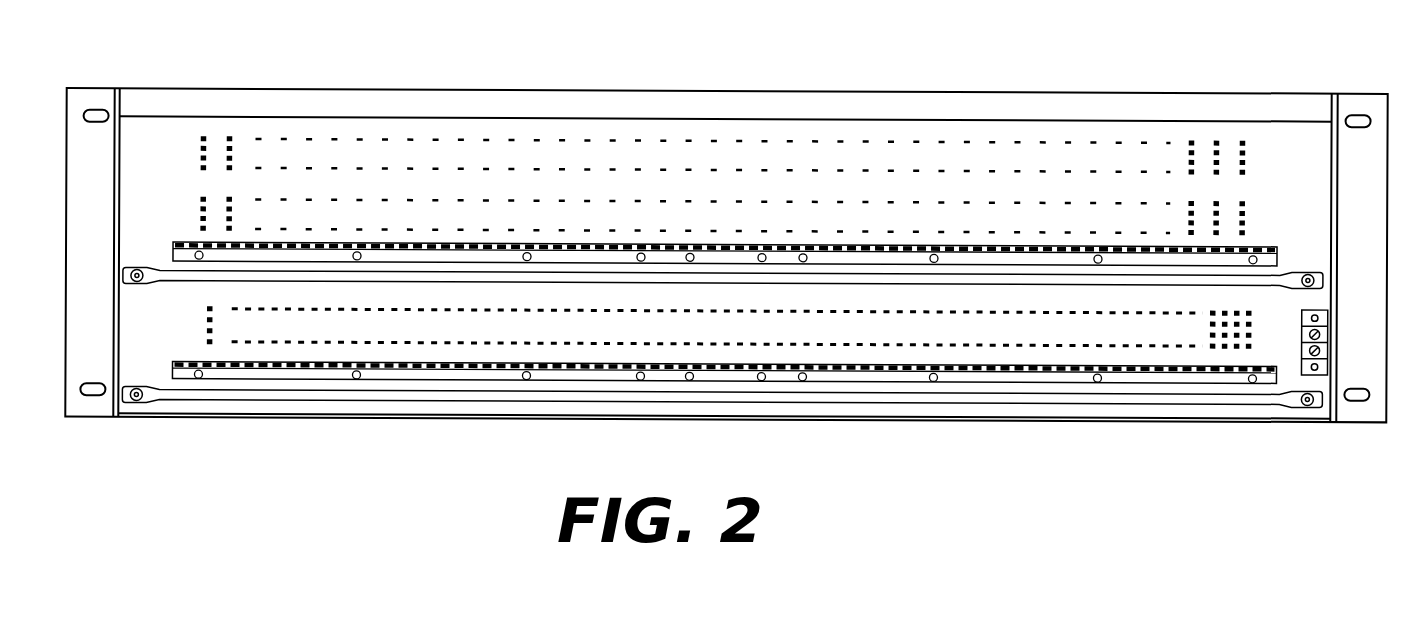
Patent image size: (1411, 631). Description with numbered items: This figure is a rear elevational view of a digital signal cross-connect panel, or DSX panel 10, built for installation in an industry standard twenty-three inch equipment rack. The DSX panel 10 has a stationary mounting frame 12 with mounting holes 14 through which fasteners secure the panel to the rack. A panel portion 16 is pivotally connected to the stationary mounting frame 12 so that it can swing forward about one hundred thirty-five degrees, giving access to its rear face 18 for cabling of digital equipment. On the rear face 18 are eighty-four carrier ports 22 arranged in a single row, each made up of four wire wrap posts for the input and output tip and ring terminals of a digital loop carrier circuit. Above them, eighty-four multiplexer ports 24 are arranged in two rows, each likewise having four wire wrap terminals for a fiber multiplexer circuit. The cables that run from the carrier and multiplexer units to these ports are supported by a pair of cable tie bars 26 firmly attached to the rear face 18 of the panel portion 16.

The digital signal cross-connect panel 10 is at (1368, 54).
The stationary mounting frame 12 is at (1371, 218).
The mounting holes 14 is at (96, 112).
The panel portion 16 is at (1147, 411).
The rear face 18 is at (1290, 128).
The carrier ports 22 is at (1213, 348).
The multiplexer ports 24 is at (1192, 141).
The cable tie bars 26 is at (184, 275).